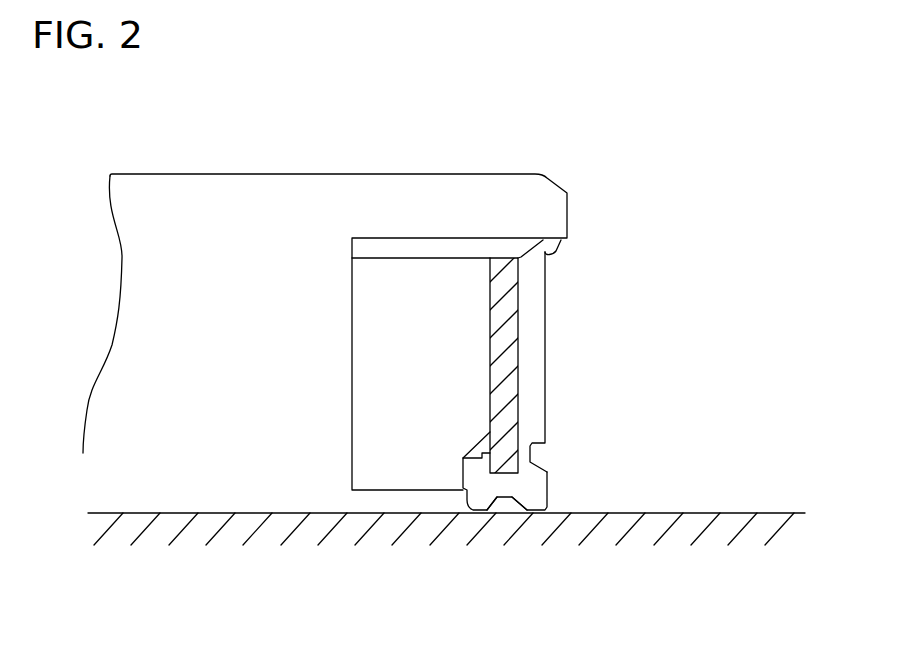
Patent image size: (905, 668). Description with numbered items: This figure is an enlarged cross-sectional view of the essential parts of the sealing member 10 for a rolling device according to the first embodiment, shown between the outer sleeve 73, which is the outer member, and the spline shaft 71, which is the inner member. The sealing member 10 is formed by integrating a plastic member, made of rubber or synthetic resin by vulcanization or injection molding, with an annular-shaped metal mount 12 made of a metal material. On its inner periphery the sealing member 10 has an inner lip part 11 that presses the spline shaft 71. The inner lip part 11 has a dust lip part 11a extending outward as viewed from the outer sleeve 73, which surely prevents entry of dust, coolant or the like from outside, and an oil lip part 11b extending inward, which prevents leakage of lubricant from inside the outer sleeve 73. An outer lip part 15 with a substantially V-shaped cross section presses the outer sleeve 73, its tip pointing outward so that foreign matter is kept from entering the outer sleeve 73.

The outer sleeve 73 is at (328, 174).
The outer lip part 15 is at (547, 250).
The metal mount 12 is at (508, 357).
The sealing member 10 is at (547, 375).
The inner lip part 11 is at (550, 483).
The dust lip part 11a is at (536, 502).
The oil lip part 11b is at (483, 502).
The spline shaft 71 is at (707, 512).